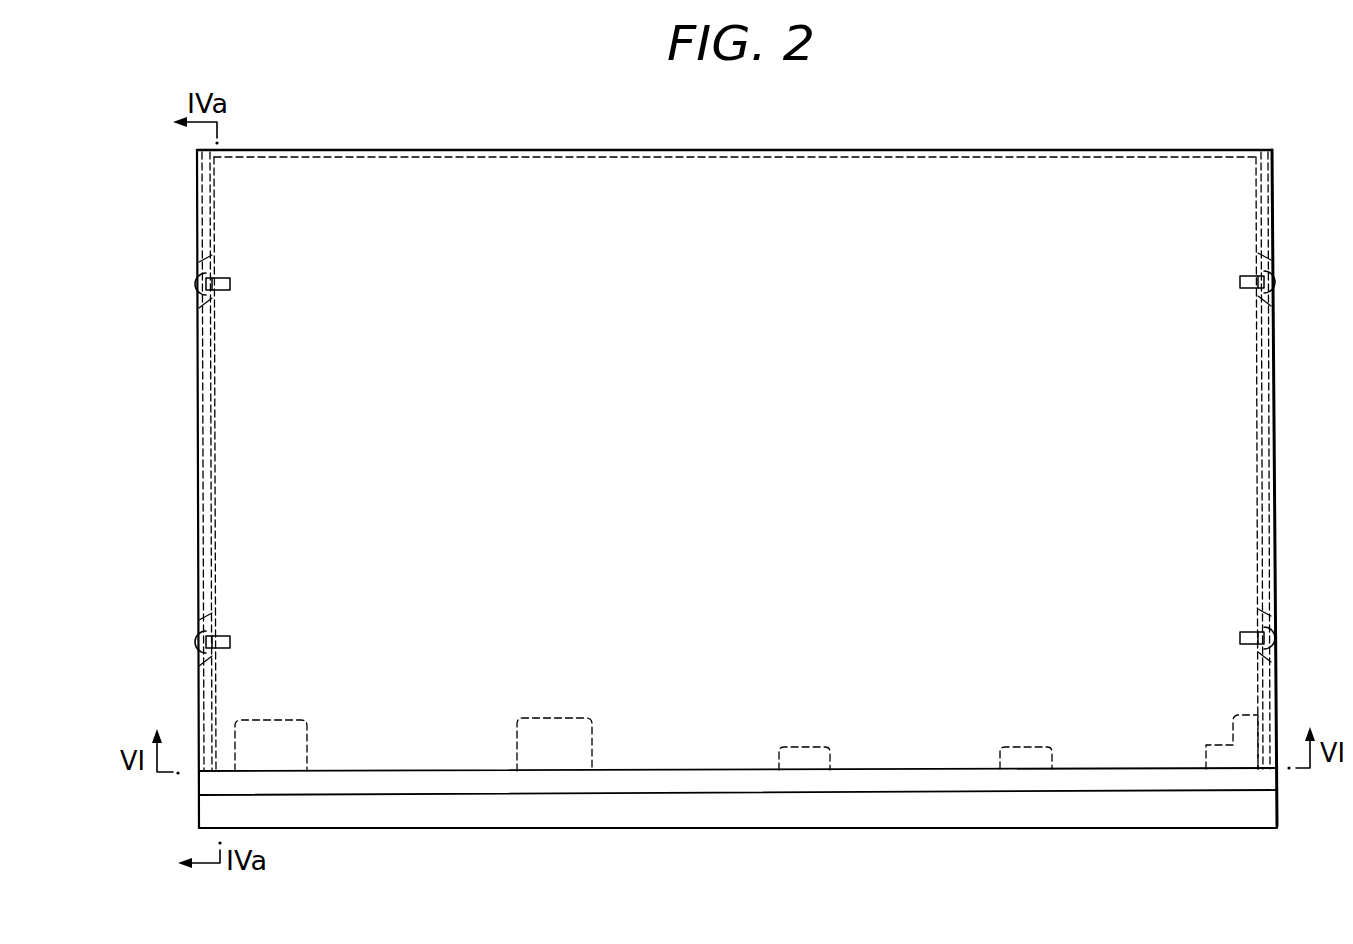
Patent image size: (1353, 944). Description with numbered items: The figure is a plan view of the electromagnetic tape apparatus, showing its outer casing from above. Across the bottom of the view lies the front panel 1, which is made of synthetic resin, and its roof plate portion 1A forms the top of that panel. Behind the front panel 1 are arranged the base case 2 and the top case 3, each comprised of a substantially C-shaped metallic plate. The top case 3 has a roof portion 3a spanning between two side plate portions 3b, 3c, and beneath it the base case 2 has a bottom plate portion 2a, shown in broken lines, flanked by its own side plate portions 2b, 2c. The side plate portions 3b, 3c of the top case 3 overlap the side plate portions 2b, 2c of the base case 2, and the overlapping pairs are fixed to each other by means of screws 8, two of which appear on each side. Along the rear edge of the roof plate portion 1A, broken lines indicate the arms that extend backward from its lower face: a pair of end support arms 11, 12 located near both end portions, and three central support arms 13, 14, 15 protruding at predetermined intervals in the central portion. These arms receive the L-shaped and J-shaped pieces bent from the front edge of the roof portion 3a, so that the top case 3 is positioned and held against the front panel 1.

The front panel 1 is at (738, 793).
The roof plate portion 1A is at (680, 780).
The base case 2 is at (768, 428).
The bottom plate portion 2a is at (946, 185).
The side plate portion 2b is at (216, 478).
The side plate portion 2c is at (1254, 420).
The top case 3 is at (737, 455).
The roof portion 3a is at (778, 203).
The side plate portion 3b is at (198, 535).
The side plate portion 3c is at (1273, 505).
The screw 8 is at (233, 284).
The end support arm 11 is at (290, 735).
The end support arm 12 is at (1218, 747).
The central support arm 13 is at (550, 735).
The central support arm 14 is at (806, 750).
The central support arm 15 is at (1027, 748).